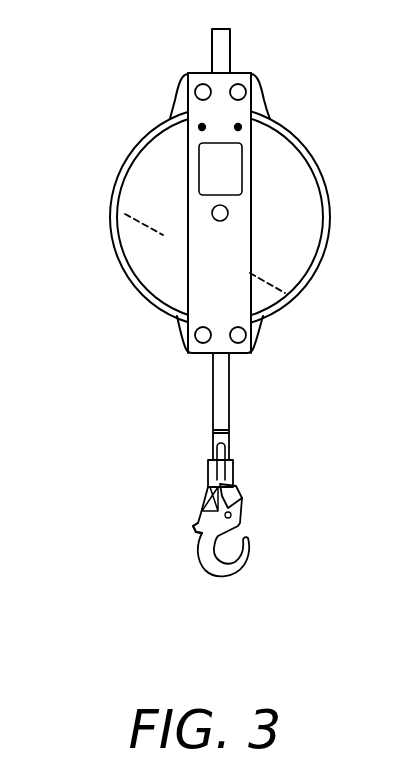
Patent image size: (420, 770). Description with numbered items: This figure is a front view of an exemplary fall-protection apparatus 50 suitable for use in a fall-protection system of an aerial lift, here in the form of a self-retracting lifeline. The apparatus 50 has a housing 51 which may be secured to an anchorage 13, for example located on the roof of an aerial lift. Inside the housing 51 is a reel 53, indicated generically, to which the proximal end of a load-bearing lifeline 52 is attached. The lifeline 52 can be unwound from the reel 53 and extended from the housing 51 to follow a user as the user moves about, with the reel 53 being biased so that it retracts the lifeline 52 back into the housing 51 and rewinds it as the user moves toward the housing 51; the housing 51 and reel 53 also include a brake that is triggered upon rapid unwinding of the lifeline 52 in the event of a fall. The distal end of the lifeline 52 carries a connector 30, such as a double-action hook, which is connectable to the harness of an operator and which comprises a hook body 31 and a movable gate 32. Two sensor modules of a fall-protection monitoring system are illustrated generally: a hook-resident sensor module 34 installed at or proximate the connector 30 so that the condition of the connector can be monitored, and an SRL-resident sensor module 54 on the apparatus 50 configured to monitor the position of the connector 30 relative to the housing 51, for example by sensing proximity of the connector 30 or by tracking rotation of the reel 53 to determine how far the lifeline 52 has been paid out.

The anchorage 13 is at (300, 37).
The fall-protection apparatus 50 is at (90, 336).
The housing 51 is at (143, 142).
The lifeline 52 is at (225, 407).
The reel 53 is at (120, 212).
The sensor module 54 is at (290, 297).
The connector 30 is at (201, 559).
The hook body 31 is at (223, 575).
The gate 32 is at (242, 528).
The sensor module 34 is at (196, 543).